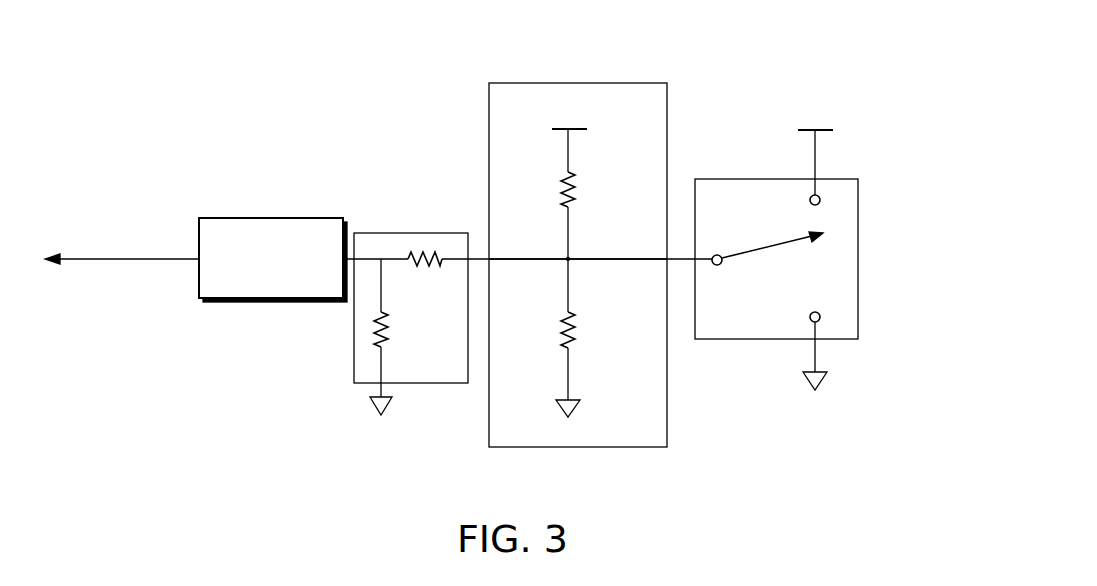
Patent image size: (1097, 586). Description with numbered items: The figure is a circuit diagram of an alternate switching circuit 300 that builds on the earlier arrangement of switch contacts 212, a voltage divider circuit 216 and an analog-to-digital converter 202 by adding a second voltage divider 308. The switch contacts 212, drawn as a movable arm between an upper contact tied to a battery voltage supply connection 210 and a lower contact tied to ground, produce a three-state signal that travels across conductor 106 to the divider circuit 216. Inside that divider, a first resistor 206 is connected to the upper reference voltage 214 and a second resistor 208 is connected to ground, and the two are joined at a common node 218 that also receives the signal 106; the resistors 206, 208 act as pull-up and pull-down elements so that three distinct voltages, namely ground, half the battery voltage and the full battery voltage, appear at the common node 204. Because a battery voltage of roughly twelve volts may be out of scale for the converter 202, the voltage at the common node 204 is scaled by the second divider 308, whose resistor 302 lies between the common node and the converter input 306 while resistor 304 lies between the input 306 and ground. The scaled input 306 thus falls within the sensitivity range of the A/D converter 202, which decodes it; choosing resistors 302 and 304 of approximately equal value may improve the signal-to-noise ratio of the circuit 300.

The switching circuit 300 is at (700, 80).
The analog-to-digital converter 202 is at (310, 218).
The upper reference voltage 214 is at (145, 258).
The resistor 302 is at (425, 247).
The resistor 304 is at (388, 330).
The input to A/D converter 306 is at (385, 262).
The second voltage divider 308 is at (400, 385).
The voltage divider circuit 216 is at (590, 447).
The first resistor 206 is at (575, 185).
The second resistor 208 is at (578, 330).
The common node 218 is at (566, 257).
The common node 204 is at (476, 262).
The conductor 106 is at (648, 263).
The supply voltage connection 210 is at (817, 162).
The switch contacts 212 is at (858, 265).